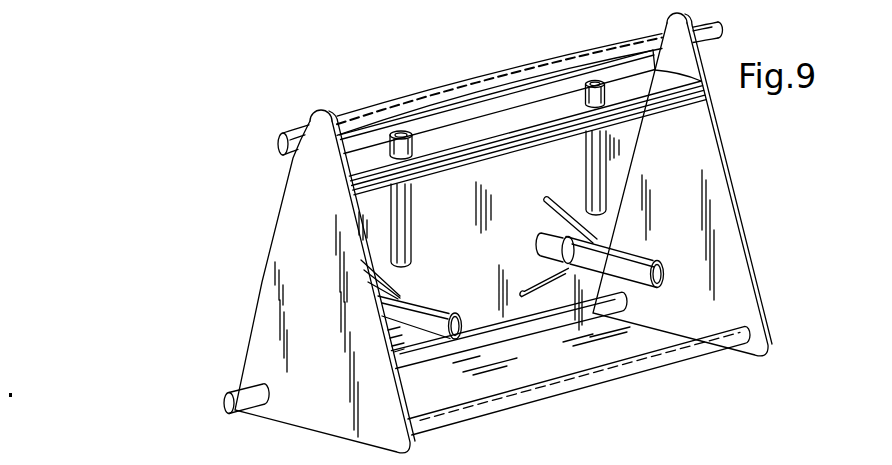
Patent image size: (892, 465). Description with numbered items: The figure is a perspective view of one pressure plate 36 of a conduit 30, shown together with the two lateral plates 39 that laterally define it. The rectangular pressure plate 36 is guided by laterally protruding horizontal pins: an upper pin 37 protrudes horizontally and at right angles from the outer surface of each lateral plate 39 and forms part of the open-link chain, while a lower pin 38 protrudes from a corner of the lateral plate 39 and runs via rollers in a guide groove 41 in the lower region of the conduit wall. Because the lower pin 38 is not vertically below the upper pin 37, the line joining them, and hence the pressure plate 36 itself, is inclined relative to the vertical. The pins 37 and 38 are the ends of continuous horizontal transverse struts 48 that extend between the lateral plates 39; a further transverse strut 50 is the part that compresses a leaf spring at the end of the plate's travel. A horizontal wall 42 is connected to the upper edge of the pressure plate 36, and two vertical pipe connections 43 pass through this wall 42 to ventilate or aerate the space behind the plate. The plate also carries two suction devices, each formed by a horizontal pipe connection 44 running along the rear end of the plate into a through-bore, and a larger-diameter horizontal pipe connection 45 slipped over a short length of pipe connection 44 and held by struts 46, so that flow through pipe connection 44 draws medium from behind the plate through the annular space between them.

The conduit 30 is at (472, 9).
The pressure plate 36 is at (466, 283).
The upper pin 37 is at (291, 134).
The lower pin 38 is at (238, 395).
The lateral plate 39 is at (272, 298).
The guide groove 41 is at (378, 9).
The horizontal wall 42 is at (520, 126).
The vertical pipe connection 43 is at (401, 212).
The horizontal pipe connection 44 is at (553, 232).
The horizontal pipe connection 45 is at (432, 327).
The strut 46 is at (552, 278).
The transverse strut 48 is at (480, 90).
The transverse strut 50 is at (684, 348).